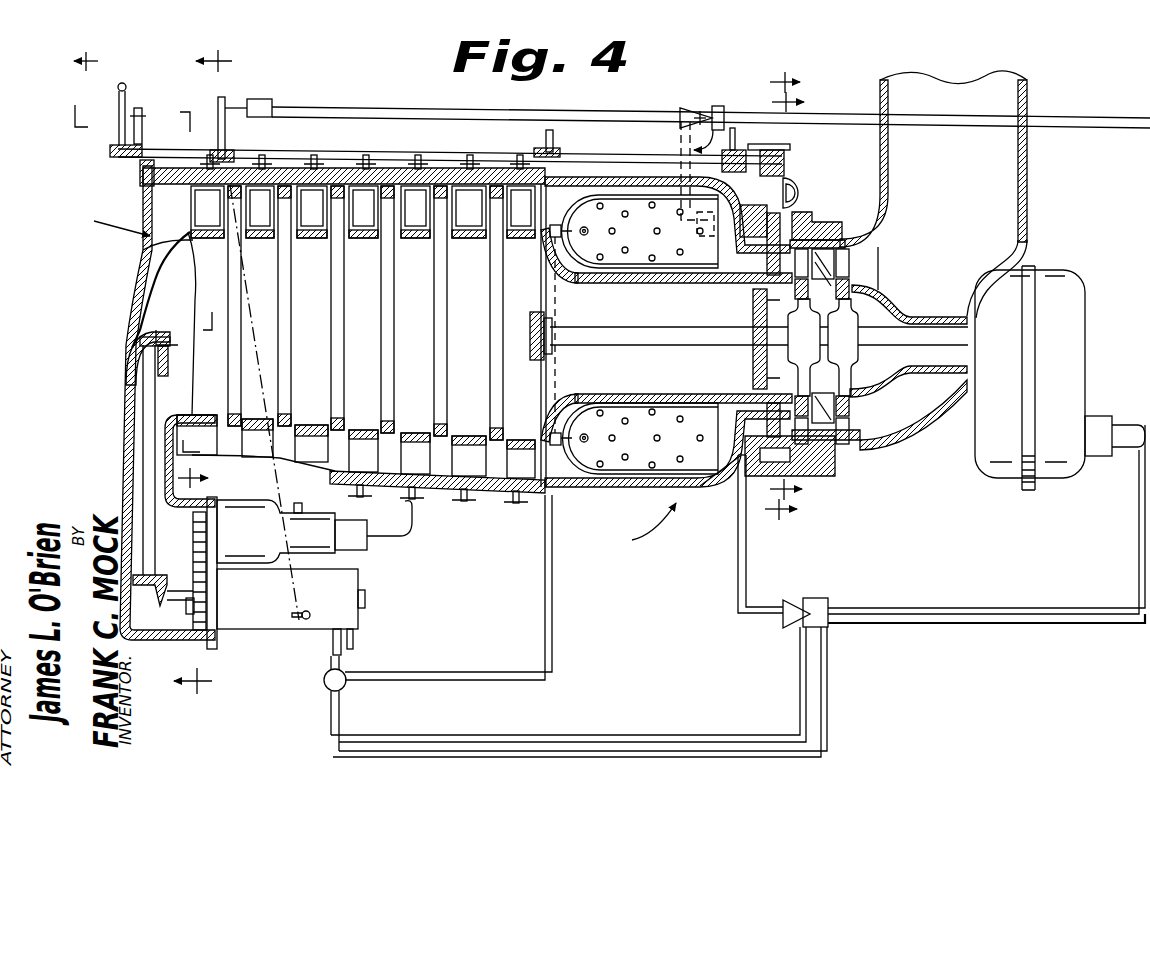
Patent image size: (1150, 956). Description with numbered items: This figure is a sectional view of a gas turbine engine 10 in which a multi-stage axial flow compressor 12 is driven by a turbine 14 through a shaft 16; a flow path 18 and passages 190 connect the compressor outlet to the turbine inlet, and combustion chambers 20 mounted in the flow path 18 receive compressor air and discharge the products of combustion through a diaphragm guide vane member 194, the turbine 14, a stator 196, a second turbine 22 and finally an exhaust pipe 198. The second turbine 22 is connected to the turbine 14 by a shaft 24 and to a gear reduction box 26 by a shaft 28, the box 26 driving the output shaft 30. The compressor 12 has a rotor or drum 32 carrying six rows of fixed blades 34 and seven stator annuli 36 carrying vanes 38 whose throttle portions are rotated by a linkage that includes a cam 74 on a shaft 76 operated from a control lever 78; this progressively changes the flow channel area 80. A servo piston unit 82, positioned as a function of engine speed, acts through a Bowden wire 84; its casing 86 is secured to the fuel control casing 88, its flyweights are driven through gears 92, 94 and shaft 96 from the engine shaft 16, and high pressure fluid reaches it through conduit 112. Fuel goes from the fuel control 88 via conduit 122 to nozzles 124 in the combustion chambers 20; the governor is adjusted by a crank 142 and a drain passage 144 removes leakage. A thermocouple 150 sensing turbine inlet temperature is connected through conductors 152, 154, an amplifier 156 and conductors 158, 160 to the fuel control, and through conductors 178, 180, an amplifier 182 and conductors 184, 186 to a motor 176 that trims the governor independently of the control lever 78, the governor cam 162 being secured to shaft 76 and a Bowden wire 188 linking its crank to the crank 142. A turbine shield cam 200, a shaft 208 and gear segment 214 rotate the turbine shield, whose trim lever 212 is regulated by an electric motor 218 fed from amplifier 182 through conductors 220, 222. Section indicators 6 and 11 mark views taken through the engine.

The section line 6 is at (151, 261).
The gas turbine engine 10 is at (603, 547).
The section line 11 is at (804, 294).
The multi-stage axial flow compressor 12 is at (435, 403).
The turbine 14 is at (812, 350).
The shaft 16 is at (640, 308).
The flow path 18 is at (560, 210).
The combustion chambers 20 is at (630, 450).
The second turbine 22 is at (852, 350).
The shaft 24 is at (866, 308).
The gear reduction box 26 is at (1035, 480).
The shaft 28 is at (934, 318).
The output shaft 30 is at (1126, 446).
The rotor or drum 32 is at (366, 318).
The fixed blades 34 is at (446, 240).
The stator annuli 36 is at (400, 168).
The vanes 38 is at (356, 332).
The cam 74 is at (556, 146).
The shaft 76 is at (306, 156).
The control lever 78 is at (128, 100).
The flow channel area 80 is at (170, 178).
The servo piston unit 82 is at (340, 545).
The Bowden wire 84 is at (414, 540).
The casing or housing 86 is at (215, 648).
The fuel control casing 88 is at (366, 603).
The gear 92 is at (194, 530).
The gear 94 is at (199, 614).
The shaft 96 is at (185, 598).
The conduit 112 is at (305, 504).
The conduit 122 is at (554, 654).
The nozzles 124 is at (565, 495).
The crank 142 is at (302, 622).
The drain passage 144 is at (348, 642).
The temperature probe or thermocouple 150 is at (705, 492).
The conductor 152 is at (738, 578).
The conductor 154 is at (747, 562).
The amplifier 156 is at (784, 624).
The conductor 158 is at (638, 740).
The conductor 160 is at (548, 752).
The governor cam 162 is at (228, 140).
The motor 176 is at (260, 100).
The conductor 178 is at (946, 610).
The conductor 180 is at (1018, 624).
The amplifier 182 is at (690, 108).
The conductor 184 is at (575, 111).
The conductor 186 is at (455, 110).
The Bowden wire 188 is at (270, 470).
The passages 190 is at (728, 400).
The diaphragm guide vane member 194 is at (782, 264).
The stator 196 is at (848, 262).
The exhaust pipe 198 is at (982, 198).
The turbine shield cam 200 is at (740, 150).
The shaft 208 is at (800, 190).
The trim lever 212 is at (782, 160).
The gear segment 214 is at (796, 186).
The electric motor 218 is at (712, 232).
The conductor 220 is at (722, 118).
The conductor 222 is at (679, 136).